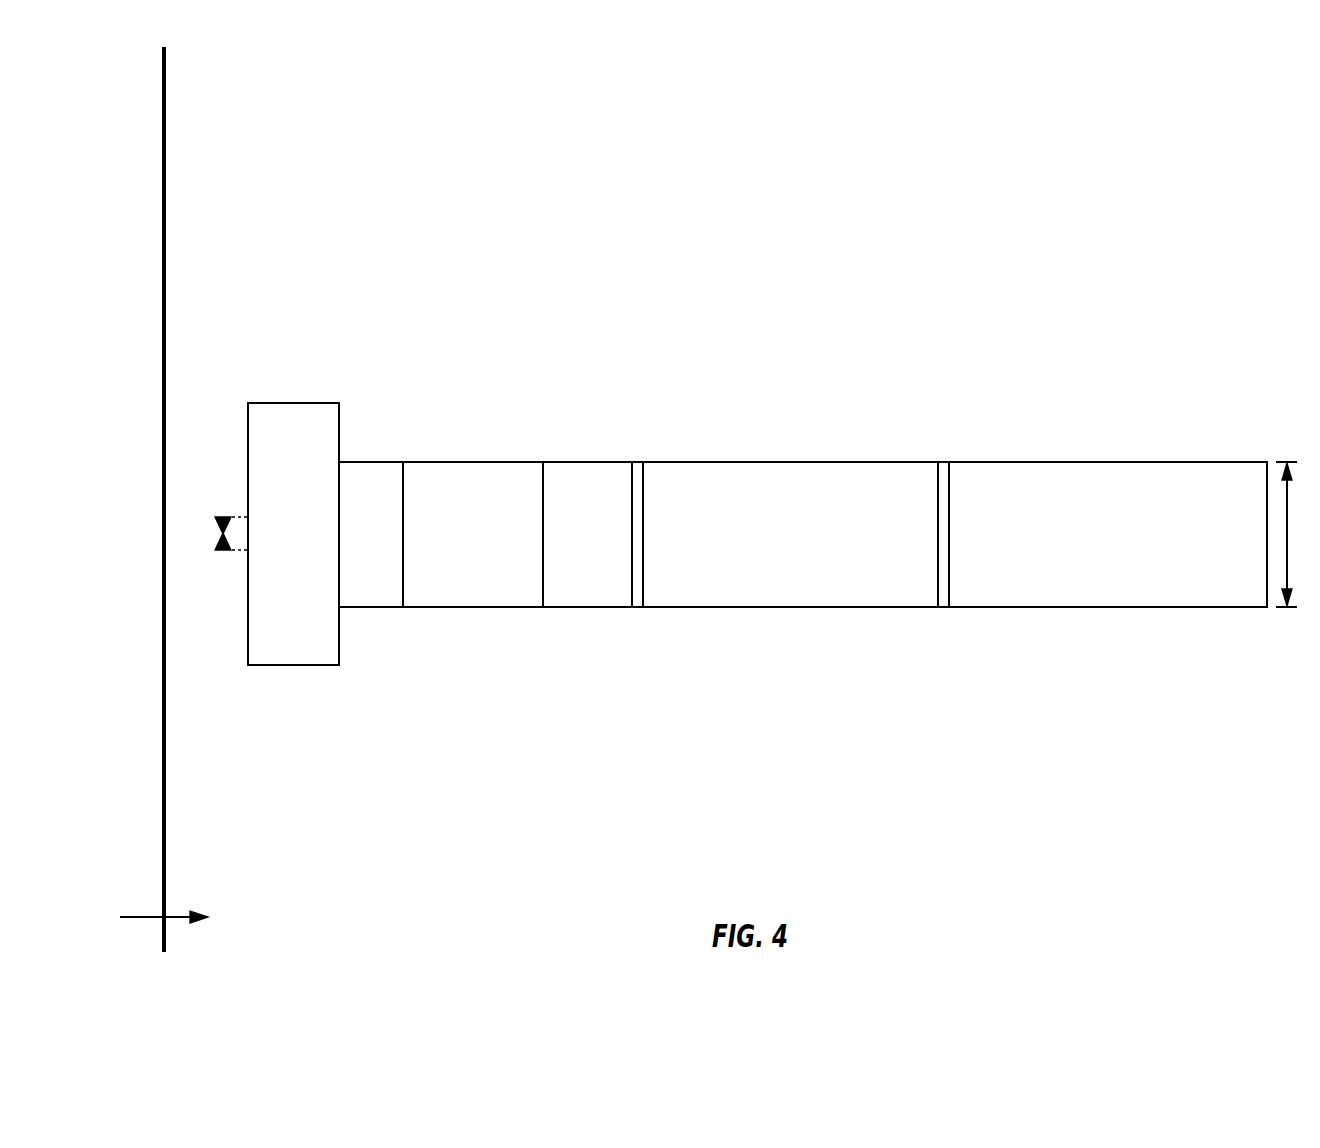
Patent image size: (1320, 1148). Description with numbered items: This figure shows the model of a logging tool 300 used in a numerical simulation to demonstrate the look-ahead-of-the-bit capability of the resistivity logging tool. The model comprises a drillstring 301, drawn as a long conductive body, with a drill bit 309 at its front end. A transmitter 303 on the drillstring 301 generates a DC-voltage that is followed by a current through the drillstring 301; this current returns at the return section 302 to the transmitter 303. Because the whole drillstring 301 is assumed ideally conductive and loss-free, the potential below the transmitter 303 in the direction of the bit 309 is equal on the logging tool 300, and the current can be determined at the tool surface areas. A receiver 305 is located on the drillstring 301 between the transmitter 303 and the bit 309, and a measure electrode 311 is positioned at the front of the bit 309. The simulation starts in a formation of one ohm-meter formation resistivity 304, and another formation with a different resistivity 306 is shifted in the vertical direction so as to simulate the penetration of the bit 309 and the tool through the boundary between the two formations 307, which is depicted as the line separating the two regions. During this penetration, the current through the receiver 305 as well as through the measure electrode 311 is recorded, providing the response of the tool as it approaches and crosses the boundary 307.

The logging tool 300 is at (954, 265).
The drillstring 301 is at (1145, 462).
The return section 302 is at (1145, 607).
The transmitter 303 is at (945, 462).
The formation resistivity 304 is at (202, 874).
The receiver 305 is at (638, 462).
The formation with a different resistivity 306 is at (128, 871).
The boundary between the two formations 307 is at (165, 762).
The drill bit 309 is at (295, 403).
The measure electrode 311 is at (239, 517).